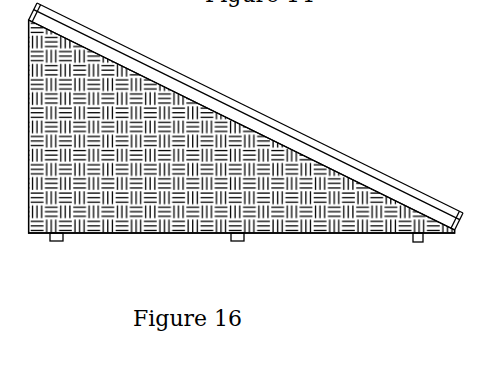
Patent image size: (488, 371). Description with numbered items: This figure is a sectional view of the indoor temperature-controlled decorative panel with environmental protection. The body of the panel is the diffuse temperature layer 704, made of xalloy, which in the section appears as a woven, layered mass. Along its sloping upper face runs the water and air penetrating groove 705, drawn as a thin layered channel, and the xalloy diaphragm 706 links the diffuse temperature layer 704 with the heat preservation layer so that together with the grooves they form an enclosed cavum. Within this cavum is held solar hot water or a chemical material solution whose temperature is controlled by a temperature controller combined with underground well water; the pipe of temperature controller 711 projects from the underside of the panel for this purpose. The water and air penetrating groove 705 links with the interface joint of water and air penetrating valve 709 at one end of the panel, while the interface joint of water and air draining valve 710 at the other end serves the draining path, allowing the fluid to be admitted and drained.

The diffuse temperature layer 704 is at (242, 120).
The water and air penetrating groove 705 is at (246, 116).
The diaphragm 706 is at (242, 125).
The interface joint of water and air penetrating valve 709 is at (87, 252).
The interface joint of water and air draining valve 710 is at (450, 253).
The pipe of temperature controller 711 is at (266, 252).